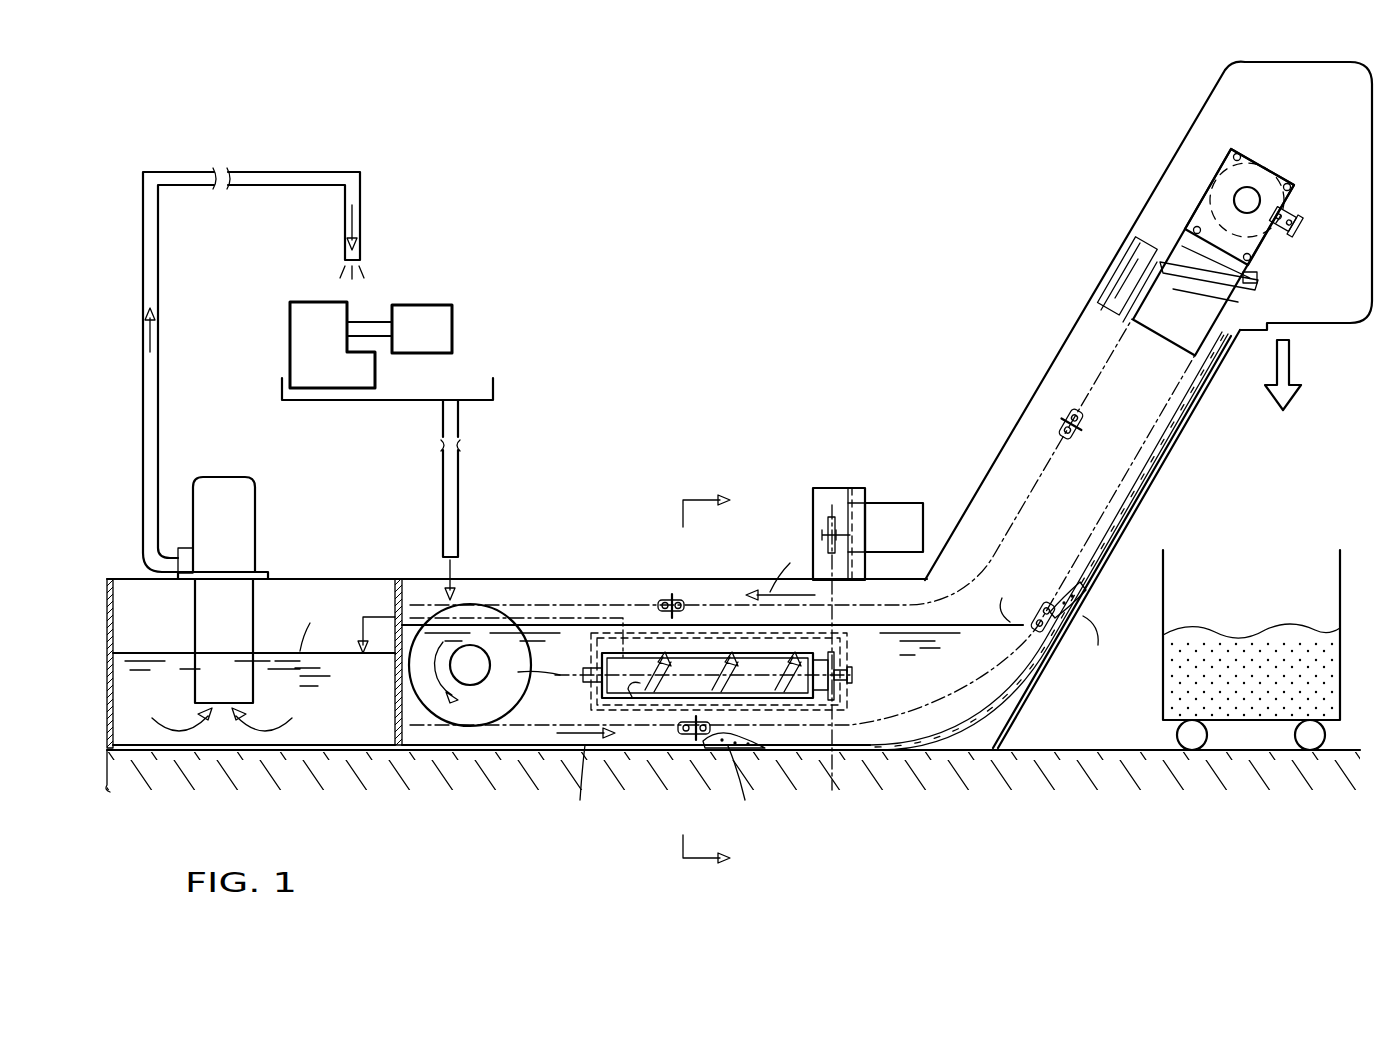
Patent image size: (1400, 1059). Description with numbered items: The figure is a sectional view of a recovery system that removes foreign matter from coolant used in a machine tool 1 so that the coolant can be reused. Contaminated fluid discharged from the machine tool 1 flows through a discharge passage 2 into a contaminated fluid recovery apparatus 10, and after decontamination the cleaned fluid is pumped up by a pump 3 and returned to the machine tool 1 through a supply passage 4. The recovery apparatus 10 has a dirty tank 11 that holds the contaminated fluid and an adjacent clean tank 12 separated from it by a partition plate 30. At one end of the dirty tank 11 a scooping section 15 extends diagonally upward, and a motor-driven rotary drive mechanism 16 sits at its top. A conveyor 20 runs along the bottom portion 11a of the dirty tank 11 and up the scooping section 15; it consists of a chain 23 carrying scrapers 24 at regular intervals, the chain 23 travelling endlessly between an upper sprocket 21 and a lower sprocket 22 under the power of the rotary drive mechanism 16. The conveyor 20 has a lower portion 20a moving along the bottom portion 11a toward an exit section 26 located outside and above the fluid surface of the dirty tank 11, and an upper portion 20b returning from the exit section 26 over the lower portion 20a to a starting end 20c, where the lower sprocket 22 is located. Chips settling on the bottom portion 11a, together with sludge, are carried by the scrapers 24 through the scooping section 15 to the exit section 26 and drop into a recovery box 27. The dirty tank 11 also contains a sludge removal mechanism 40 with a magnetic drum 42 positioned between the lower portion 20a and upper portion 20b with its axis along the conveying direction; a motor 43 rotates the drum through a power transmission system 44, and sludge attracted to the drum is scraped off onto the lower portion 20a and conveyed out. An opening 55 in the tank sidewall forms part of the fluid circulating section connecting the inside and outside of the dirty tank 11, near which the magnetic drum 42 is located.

The machine tool 1 is at (473, 306).
The discharge passage 2 is at (458, 493).
The pump 3 is at (255, 513).
The supply passage 4 is at (143, 262).
The contaminated fluid recovery apparatus 10 is at (656, 476).
The dirty tank 11 is at (600, 579).
The bottom portion 11a is at (535, 746).
The clean tank 12 is at (325, 579).
The scooping section 15 is at (1173, 449).
The rotary drive mechanism 16 is at (1201, 219).
The conveyor 20 is at (841, 488).
The lower portion 20a is at (812, 727).
The upper portion 20b is at (735, 605).
The starting end 20c is at (472, 722).
The upper sprocket 21 is at (1262, 176).
The lower sprocket 22 is at (448, 712).
The chain 23 is at (1088, 388).
The scrapers 24 is at (663, 599).
The exit section 26 is at (1318, 328).
The recovery box 27 is at (1340, 585).
The partition plate 30 is at (402, 593).
The sludge removal mechanism 40 is at (847, 715).
The magnetic drum 42 is at (693, 650).
The motor 43 is at (895, 503).
The power transmission system 44 is at (830, 518).
The opening 55 is at (623, 700).